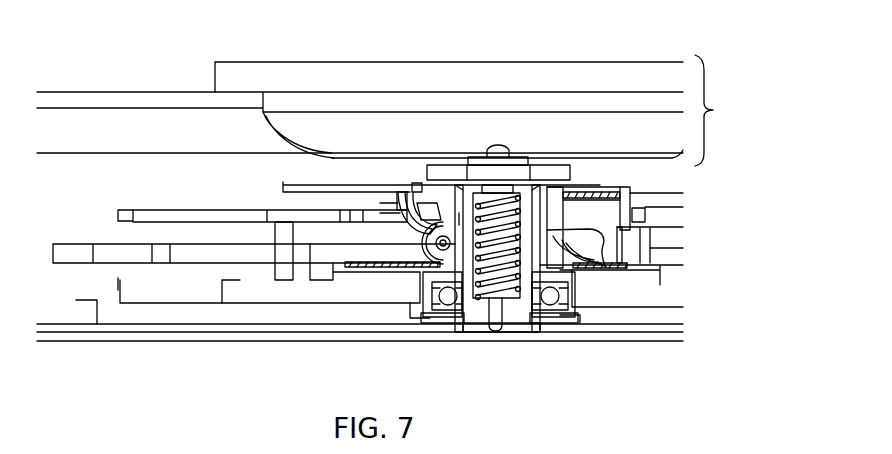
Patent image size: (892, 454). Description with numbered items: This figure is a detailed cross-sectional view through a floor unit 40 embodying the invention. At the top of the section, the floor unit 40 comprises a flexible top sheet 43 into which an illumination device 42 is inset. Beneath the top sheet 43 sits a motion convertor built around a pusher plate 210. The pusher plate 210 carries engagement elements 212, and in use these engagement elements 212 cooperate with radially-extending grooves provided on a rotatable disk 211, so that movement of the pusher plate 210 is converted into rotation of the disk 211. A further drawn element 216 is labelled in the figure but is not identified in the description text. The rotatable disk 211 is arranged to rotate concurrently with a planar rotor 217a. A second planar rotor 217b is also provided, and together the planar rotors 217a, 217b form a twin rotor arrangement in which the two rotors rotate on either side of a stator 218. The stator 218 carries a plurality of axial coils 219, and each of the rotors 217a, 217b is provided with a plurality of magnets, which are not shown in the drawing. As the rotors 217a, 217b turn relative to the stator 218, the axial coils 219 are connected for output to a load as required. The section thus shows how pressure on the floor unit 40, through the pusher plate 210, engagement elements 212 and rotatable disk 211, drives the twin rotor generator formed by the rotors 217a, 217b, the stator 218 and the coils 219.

The floor unit 40 is at (147, 68).
The flexible top sheet 43 is at (102, 103).
The illumination device 42 is at (726, 110).
The pusher plate 210 is at (673, 186).
The second planar rotor 217b is at (130, 212).
The stator 218 is at (64, 247).
The axial coils 219 is at (64, 304).
The planar rotor 217a is at (145, 293).
The rotatable disk 211 is at (345, 266).
The support plate 216 is at (383, 267).
The engagement elements 212 is at (610, 248).